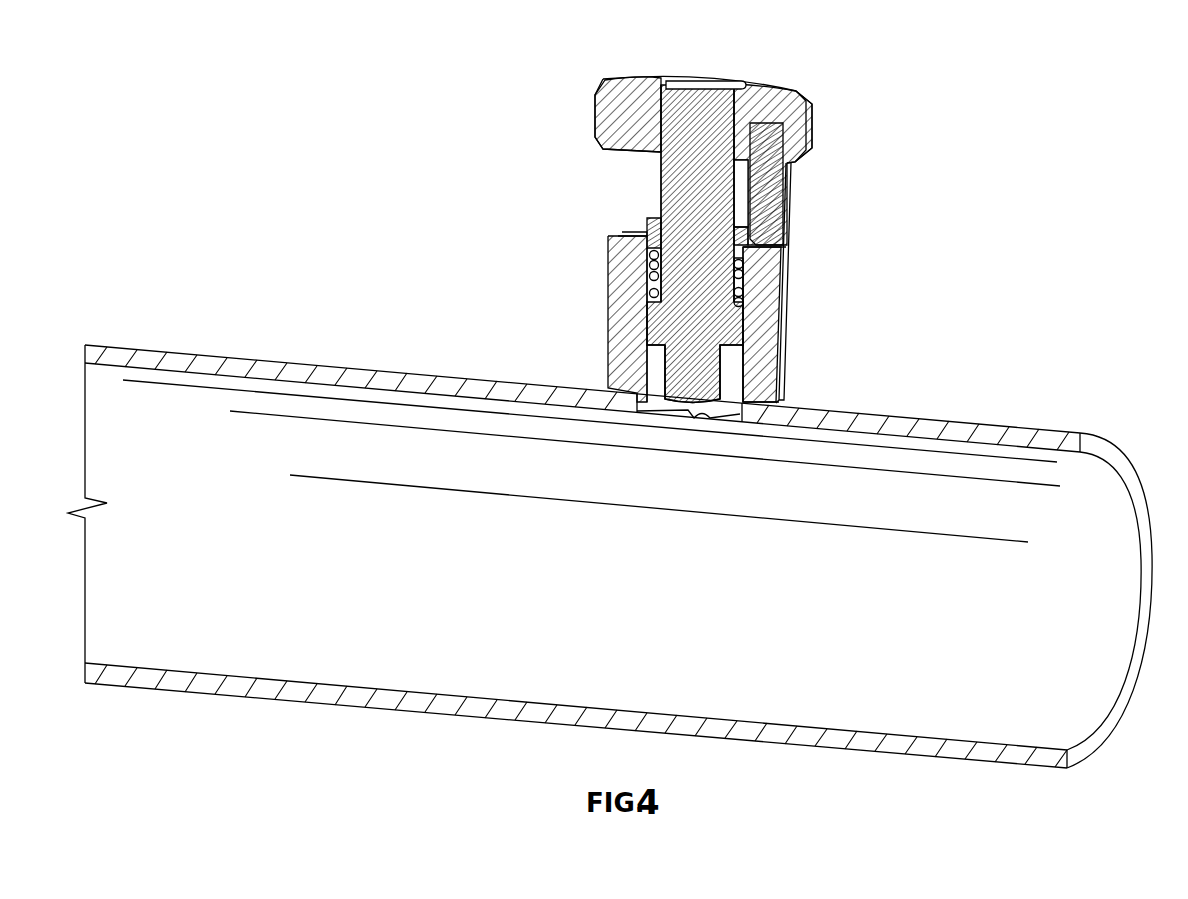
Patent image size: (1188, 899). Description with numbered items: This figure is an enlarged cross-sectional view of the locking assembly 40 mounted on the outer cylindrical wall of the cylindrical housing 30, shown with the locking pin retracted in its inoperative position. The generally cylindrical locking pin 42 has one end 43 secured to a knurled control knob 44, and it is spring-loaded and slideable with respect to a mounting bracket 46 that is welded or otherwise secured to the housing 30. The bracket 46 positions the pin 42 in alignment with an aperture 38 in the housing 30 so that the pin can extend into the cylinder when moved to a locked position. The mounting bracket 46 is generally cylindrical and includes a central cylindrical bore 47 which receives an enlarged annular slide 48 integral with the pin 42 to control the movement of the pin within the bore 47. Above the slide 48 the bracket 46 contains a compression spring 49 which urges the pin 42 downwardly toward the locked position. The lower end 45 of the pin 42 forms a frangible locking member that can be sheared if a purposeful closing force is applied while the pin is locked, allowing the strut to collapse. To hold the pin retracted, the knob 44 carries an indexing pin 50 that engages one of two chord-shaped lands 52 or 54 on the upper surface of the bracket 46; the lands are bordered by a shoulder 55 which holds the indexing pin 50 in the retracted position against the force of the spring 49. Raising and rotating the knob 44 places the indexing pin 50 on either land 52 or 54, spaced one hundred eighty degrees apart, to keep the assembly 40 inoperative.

The cylindrical housing 30 is at (877, 412).
The aperture 38 is at (698, 419).
The locking assembly 40 is at (839, 119).
The locking pin 42 is at (656, 177).
The one end of locking pin 43 is at (711, 84).
The knurled control knob 44 is at (818, 134).
The end of pin 45 is at (657, 370).
The mounting bracket 46 is at (789, 289).
The central cylindrical bore 47 is at (730, 368).
The enlarged annular slide 48 is at (644, 325).
The compression spring 49 is at (644, 279).
The indexing pin 50 is at (792, 187).
The chord-shaped land 52 is at (622, 233).
The chord-shaped land 54 is at (791, 247).
The shoulder 55 is at (647, 228).